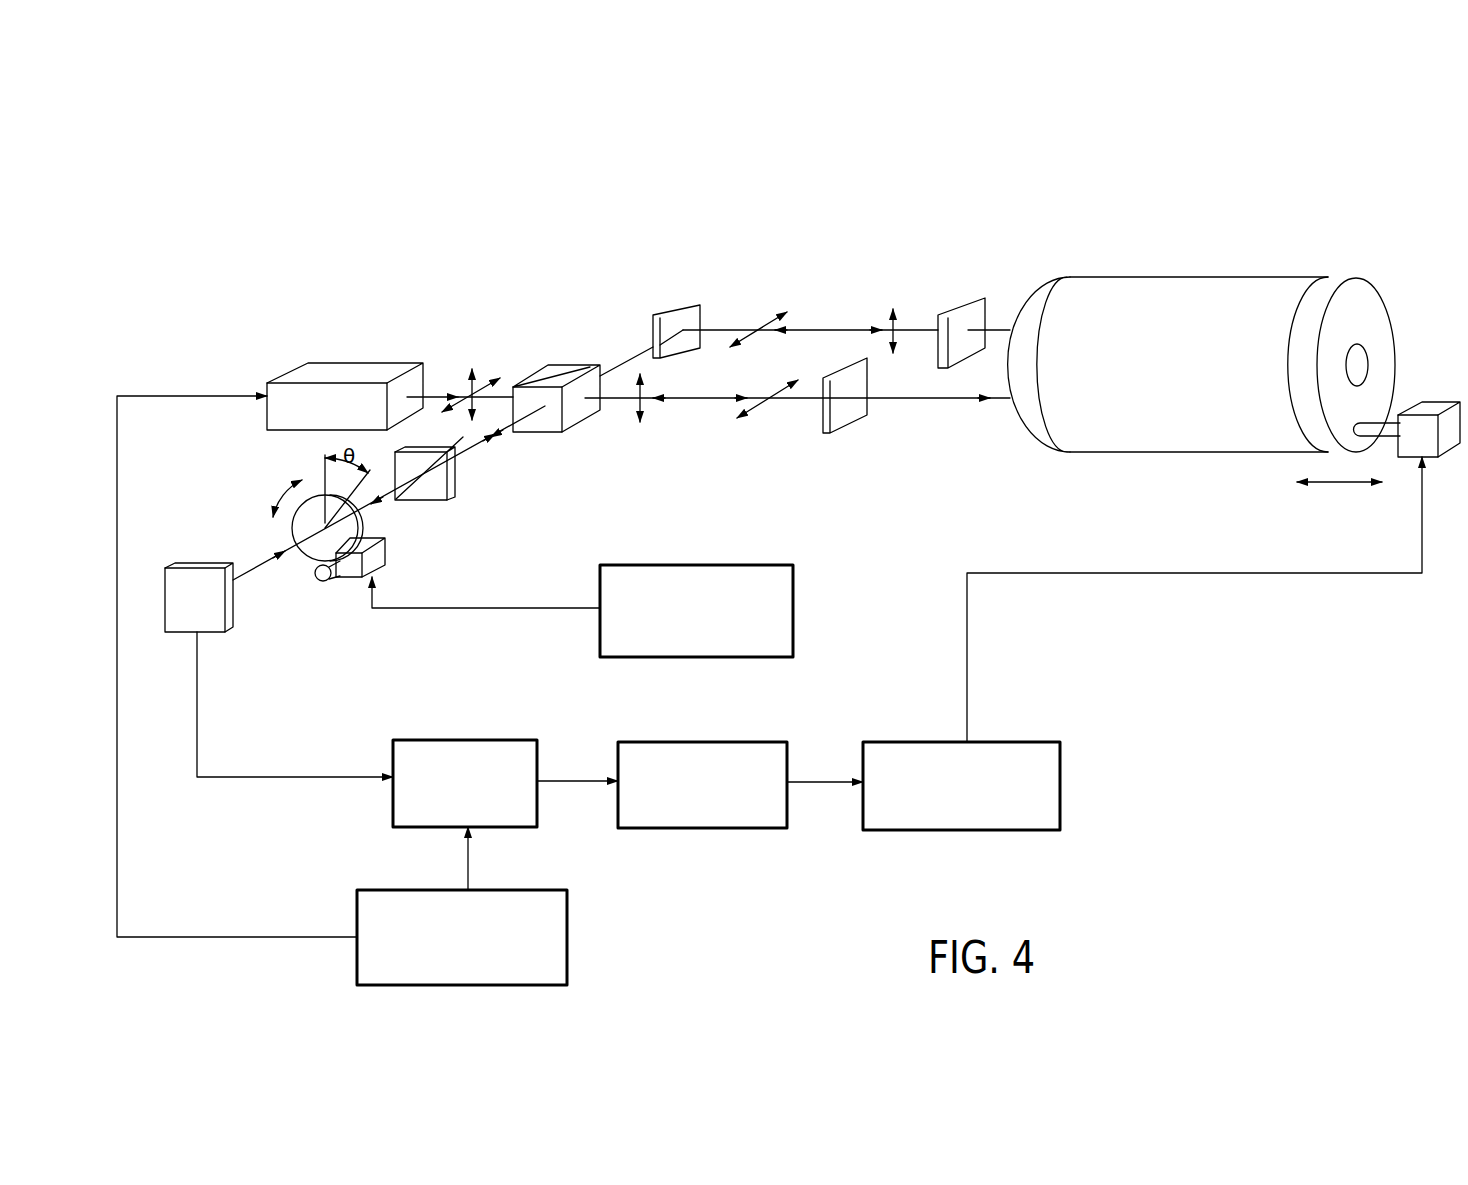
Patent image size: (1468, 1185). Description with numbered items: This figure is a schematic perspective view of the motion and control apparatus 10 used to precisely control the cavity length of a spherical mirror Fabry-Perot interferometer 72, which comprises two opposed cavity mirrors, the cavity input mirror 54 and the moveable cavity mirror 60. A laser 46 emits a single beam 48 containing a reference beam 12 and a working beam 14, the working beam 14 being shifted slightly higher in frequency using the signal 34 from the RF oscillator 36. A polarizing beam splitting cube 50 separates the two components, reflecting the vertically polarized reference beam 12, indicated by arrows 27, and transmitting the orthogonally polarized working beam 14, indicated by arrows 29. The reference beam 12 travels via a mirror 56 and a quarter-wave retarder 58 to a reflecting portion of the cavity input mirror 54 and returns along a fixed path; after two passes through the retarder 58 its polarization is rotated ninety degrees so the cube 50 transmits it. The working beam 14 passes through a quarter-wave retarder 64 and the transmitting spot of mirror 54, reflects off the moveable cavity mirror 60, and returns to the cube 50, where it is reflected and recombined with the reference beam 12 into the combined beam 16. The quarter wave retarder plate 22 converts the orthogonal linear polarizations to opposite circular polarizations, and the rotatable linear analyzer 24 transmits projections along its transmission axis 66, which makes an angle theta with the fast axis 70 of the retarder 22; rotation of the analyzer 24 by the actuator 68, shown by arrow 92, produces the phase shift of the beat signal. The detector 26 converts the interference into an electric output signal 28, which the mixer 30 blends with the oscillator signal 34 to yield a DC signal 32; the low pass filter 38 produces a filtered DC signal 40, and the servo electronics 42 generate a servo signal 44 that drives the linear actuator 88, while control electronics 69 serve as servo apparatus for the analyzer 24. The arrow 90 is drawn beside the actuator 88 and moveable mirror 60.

The motion and control apparatus 10 is at (440, 305).
The reference beam 12 is at (803, 328).
The working beam 14 is at (797, 403).
The optical beam 16 is at (472, 452).
The quarter wave retarder plate 22 is at (455, 488).
The rotatable linear analyzer 24 is at (360, 525).
The detector 26 is at (237, 623).
The arrows indicating vertical polarization 27 is at (478, 376).
The electric output signal 28 is at (262, 777).
The arrows indicating orthogonal polarization 29 is at (763, 404).
The mixer 30 is at (462, 740).
The DC signal 32 is at (582, 779).
The RF oscillator signal 34 is at (240, 937).
The RF oscillator 36 is at (568, 920).
The low pass filter 38 is at (688, 742).
The filtered DC signal 40 is at (825, 781).
The servo electronics 42 is at (997, 742).
The servo signal 44 is at (967, 650).
The laser 46 is at (353, 362).
The single beam 48 is at (432, 395).
The polarizing beam splitting cube 50 is at (580, 426).
The cavity input mirror 54 is at (1048, 451).
The mirror 56 is at (680, 305).
The quarter-wave retarder 58 is at (972, 298).
The moveable cavity mirror 60 is at (1337, 280).
The quarter-wave retarder 64 is at (863, 420).
The transmission axis 66 is at (307, 562).
The actuator 68 is at (385, 563).
The control electronics 69 is at (795, 593).
The fast axis 70 is at (385, 505).
The Fabry-Perot interferometer 72 is at (1201, 361).
The linear actuator 88 is at (1420, 402).
The translation direction 90 is at (1333, 485).
The arrow indicating rotation 92 is at (263, 494).